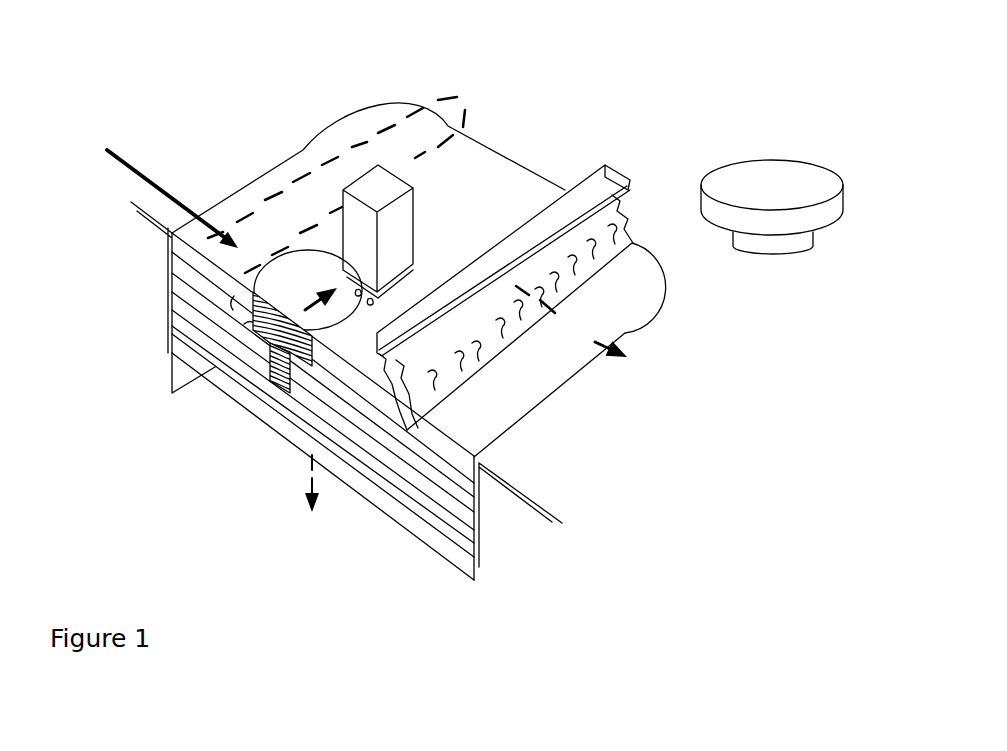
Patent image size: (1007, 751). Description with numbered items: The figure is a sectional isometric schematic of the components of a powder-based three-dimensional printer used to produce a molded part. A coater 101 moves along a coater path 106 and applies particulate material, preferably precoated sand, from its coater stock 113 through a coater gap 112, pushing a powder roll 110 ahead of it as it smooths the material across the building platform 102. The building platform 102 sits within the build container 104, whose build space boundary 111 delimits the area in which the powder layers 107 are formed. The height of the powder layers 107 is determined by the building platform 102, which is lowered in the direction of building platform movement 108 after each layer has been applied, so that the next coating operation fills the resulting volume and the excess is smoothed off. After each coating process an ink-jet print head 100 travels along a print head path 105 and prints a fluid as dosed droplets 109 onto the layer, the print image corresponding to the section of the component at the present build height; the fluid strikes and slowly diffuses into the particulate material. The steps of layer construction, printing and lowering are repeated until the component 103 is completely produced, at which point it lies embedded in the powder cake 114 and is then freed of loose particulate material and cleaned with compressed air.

The print head 100 is at (397, 247).
The coater 101 is at (550, 230).
The building platform 102 is at (232, 377).
The component 103 is at (290, 282).
The build container 104 is at (173, 300).
The print head path 105 is at (355, 145).
The coater path 106 is at (572, 323).
The powder layers 107 is at (457, 488).
The direction of building platform movement 108 is at (308, 484).
The dosed droplets 109 is at (370, 303).
The powder roll 110 is at (600, 232).
The build space boundary 111 is at (288, 150).
The coater gap 112 is at (312, 340).
The coater stock 113 is at (387, 375).
The powder cake 114 is at (152, 182).